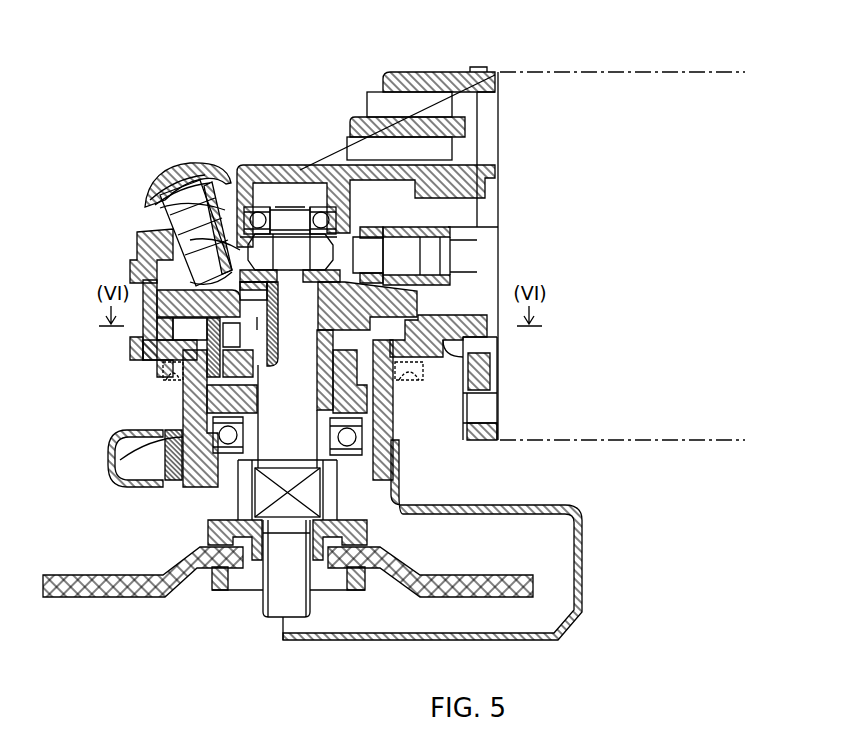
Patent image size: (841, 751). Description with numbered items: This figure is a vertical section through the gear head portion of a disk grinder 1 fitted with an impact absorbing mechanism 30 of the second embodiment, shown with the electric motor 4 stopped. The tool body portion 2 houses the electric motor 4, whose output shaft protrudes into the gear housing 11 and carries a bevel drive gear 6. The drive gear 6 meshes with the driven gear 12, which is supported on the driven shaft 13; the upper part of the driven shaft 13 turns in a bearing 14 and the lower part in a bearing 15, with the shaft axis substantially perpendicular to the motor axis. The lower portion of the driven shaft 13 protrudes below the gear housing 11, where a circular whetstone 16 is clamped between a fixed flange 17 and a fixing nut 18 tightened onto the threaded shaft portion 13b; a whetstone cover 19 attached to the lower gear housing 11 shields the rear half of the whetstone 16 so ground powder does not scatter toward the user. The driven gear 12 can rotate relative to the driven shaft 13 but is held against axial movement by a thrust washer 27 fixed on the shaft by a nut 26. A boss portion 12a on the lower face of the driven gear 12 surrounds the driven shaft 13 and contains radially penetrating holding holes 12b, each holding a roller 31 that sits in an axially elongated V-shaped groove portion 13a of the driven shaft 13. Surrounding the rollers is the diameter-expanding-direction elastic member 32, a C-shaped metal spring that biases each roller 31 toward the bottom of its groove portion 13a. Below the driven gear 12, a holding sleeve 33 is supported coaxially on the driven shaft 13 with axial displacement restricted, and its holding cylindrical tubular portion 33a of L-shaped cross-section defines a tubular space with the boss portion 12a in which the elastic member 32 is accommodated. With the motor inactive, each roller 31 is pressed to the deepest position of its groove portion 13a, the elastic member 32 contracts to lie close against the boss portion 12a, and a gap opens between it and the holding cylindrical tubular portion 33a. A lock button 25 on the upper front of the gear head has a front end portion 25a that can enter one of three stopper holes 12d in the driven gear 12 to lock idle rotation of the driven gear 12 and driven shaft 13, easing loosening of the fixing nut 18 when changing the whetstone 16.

The disk grinder 1 is at (658, 493).
The tool body portion 2 is at (606, 79).
The electric motor 4 is at (465, 235).
The drive gear 6 is at (397, 222).
The gear housing 11 is at (269, 166).
The driven gear 12 is at (220, 297).
The boss portion 12a is at (394, 412).
The holding hole 12b is at (300, 282).
The stopper hole 12d is at (140, 248).
The driven shaft 13 is at (427, 358).
The groove portion 13a is at (289, 266).
The threaded shaft portion 13b is at (275, 602).
The bearing 14 is at (319, 214).
The bearing 15 is at (119, 461).
The circular whetstone 16 is at (133, 593).
The fixed flange 17 is at (205, 523).
The fixing nut 18 is at (217, 593).
The whetstone cover 19 is at (583, 573).
The lock button 25 is at (153, 185).
The front end portion 25a is at (227, 210).
The nut 26 is at (260, 252).
The thrust washer 27 is at (202, 212).
The impact absorbing mechanism 30 is at (335, 486).
The roller 31 is at (154, 356).
The diameter-expanding-direction elastic member 32 is at (430, 352).
The holding sleeve 33 is at (185, 405).
The holding cylindrical tubular portion 33a is at (206, 328).